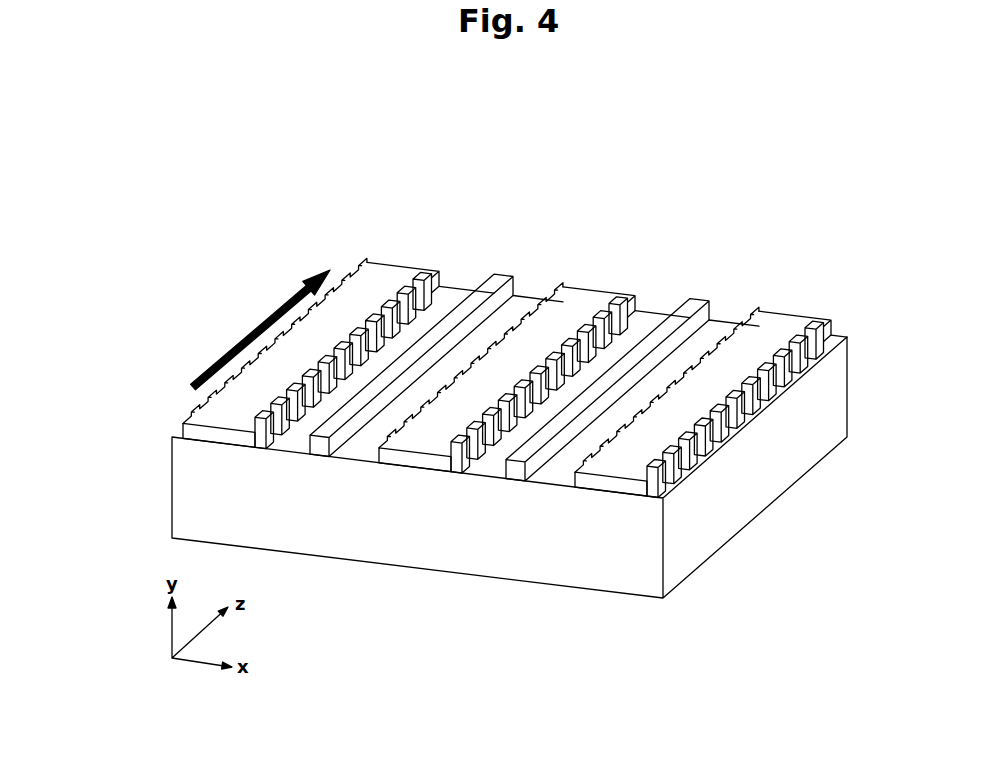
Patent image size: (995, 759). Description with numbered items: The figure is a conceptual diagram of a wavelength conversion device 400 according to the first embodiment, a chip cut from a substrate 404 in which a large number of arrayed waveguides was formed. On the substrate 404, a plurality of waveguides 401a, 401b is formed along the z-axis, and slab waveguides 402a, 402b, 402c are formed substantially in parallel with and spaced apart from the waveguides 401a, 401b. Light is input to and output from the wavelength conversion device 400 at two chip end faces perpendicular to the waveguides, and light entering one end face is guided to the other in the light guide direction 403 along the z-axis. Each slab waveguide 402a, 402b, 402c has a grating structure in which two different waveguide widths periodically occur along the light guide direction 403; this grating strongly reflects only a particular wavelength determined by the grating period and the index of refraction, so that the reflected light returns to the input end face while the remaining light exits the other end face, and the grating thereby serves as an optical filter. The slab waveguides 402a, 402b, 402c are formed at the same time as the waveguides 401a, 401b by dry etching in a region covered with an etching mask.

The wavelength conversion device 400 is at (509, 373).
The waveguide 401a is at (488, 277).
The waveguide 401b is at (690, 307).
The slab waveguide 402a is at (397, 270).
The slab waveguide 402b is at (594, 300).
The slab waveguide 402c is at (784, 313).
The light guide direction 403 is at (262, 322).
The substrate 404 is at (457, 550).